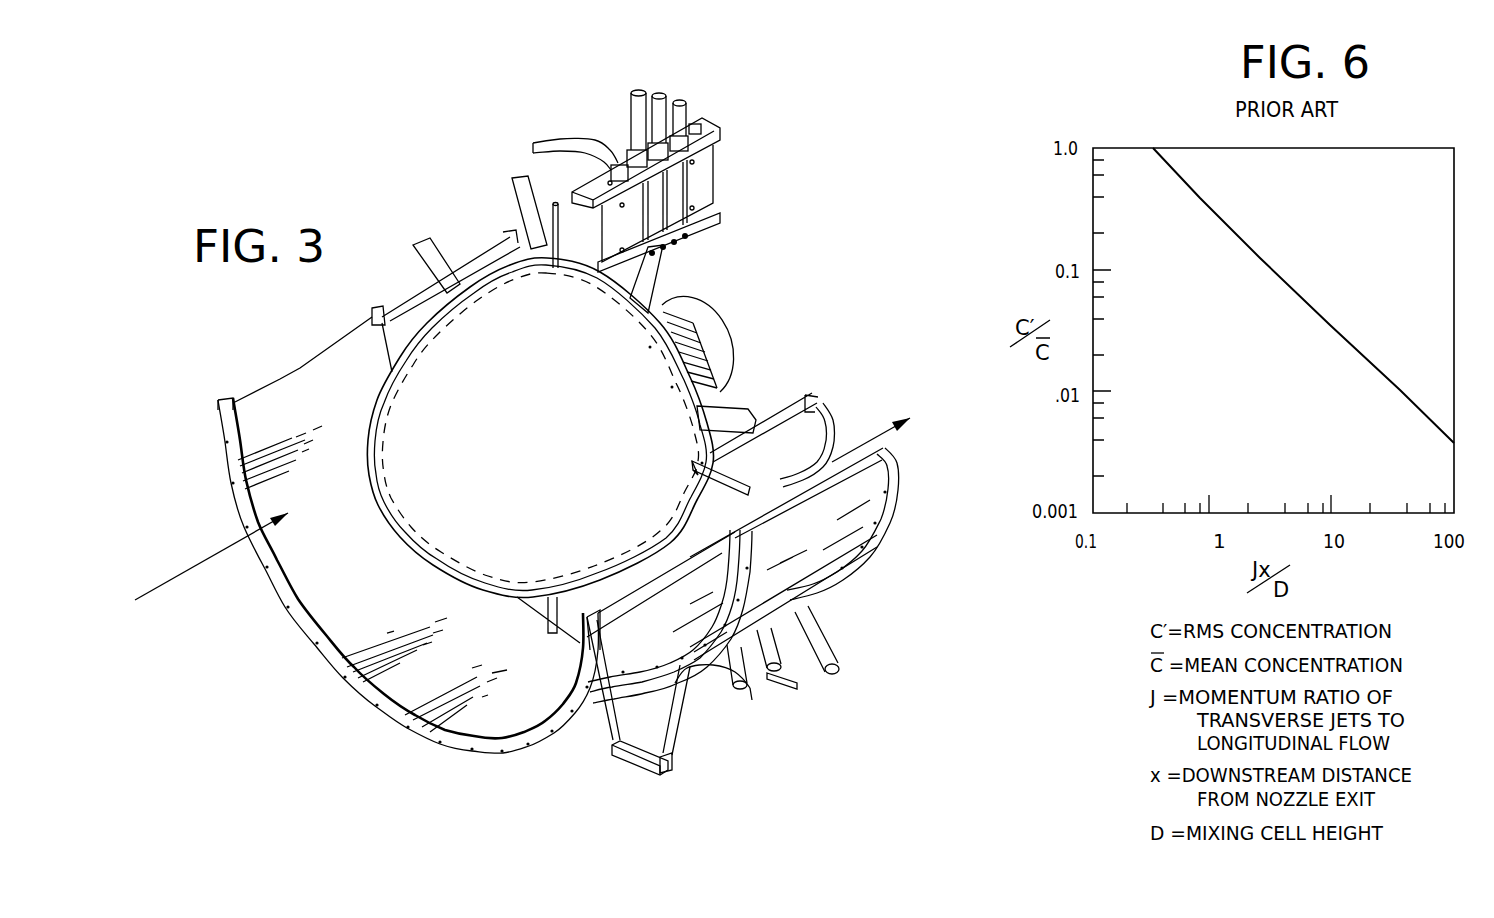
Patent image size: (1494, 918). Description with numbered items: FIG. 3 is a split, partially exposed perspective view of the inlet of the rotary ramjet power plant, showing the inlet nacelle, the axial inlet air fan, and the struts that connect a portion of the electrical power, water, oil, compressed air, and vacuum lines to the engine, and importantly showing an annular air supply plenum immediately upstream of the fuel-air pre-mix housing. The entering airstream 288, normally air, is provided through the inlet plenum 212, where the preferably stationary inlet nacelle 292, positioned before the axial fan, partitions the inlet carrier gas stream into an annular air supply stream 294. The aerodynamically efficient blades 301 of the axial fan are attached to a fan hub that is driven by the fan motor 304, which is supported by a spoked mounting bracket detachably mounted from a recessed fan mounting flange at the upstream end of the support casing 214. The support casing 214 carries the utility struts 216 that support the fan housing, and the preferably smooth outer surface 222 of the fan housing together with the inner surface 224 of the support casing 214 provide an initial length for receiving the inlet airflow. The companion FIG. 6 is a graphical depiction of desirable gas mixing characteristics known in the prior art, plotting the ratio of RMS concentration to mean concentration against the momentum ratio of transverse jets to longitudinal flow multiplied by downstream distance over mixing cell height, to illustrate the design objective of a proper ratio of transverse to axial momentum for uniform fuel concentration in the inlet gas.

The inlet plenum 212 is at (503, 713).
The support casing 214 is at (833, 537).
The utility struts 216 is at (695, 185).
The outer surface of the fan housing 222 is at (798, 480).
The inner surface of the support casing 224 is at (400, 323).
The entering airstream 288 is at (220, 553).
The inlet nacelle 292 is at (400, 537).
The annular air supply stream 294 is at (877, 438).
The blades 301 is at (520, 186).
The fan motor 304 is at (723, 333).